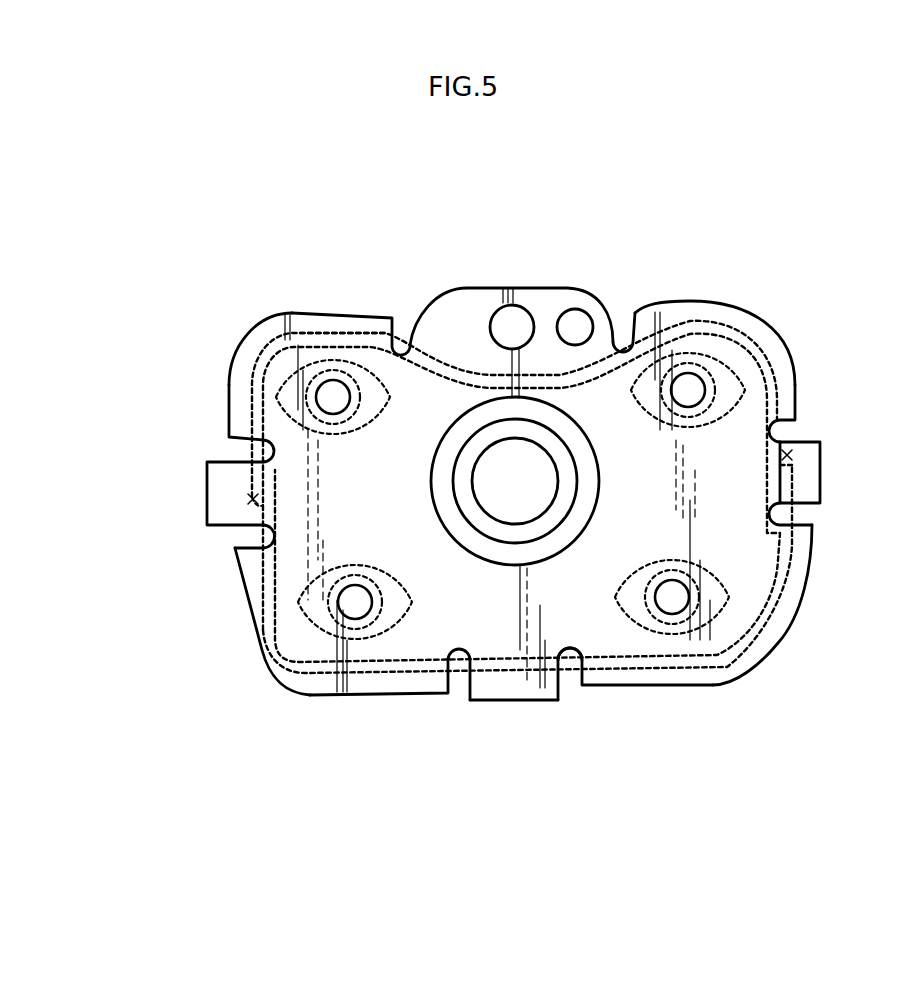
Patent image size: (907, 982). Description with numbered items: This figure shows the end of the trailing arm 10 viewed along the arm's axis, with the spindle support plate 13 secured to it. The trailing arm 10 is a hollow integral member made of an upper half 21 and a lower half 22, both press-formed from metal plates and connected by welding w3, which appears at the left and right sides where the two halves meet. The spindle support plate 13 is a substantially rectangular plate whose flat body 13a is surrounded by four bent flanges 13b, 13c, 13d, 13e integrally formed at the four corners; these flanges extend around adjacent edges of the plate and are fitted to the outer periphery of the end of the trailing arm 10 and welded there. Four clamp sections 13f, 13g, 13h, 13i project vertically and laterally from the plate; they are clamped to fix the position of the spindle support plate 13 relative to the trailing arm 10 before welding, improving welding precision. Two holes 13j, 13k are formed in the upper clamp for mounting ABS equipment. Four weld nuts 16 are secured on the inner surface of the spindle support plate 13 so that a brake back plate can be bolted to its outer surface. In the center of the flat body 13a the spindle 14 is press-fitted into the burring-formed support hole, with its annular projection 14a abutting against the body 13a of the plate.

The trailing arm 10 is at (506, 497).
The spindle support plate 13 is at (606, 632).
The flat body 13a is at (397, 507).
The bent flange 13b is at (725, 316).
The bent flange 13c is at (258, 328).
The bent flange 13d is at (287, 676).
The bent flange 13e is at (768, 632).
The clamp section 13f is at (470, 298).
The clamp section 13g is at (215, 490).
The clamp section 13h is at (513, 692).
The clamp section 13i is at (812, 477).
The hole 13j is at (578, 318).
The hole 13k is at (519, 316).
The spindle 14 is at (483, 511).
The annular projection 14a is at (558, 540).
The weld nuts 16 is at (362, 426).
The upper half 21 is at (345, 335).
The lower half 22 is at (560, 692).
The welding w3 is at (250, 508).